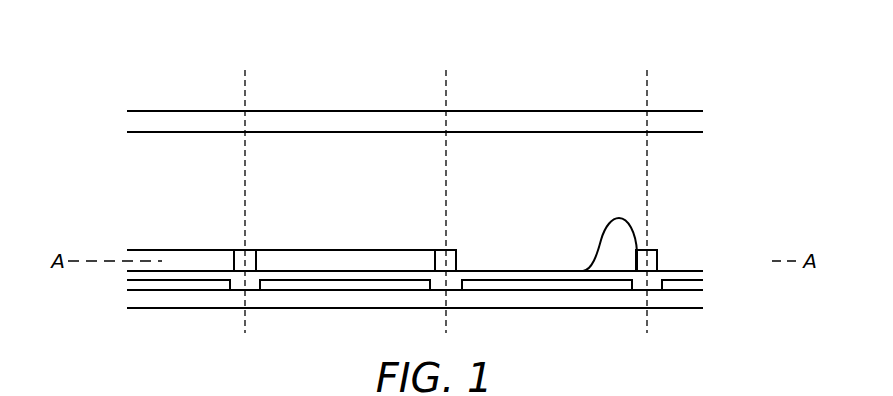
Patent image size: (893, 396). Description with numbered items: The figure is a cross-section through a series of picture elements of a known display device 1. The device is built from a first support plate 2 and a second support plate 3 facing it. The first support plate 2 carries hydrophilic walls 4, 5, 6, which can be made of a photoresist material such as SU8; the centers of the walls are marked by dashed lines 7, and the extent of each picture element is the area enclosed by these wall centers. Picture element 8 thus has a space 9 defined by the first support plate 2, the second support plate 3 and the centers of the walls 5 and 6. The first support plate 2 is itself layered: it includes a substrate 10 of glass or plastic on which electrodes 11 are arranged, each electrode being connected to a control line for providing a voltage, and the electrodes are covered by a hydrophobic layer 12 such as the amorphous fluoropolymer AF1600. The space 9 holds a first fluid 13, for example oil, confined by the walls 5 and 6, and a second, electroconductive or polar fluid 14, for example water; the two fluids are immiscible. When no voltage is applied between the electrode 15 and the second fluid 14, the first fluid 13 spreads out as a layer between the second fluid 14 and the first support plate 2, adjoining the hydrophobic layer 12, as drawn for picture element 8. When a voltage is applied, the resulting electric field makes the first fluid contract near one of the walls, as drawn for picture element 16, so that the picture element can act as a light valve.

The display device 1 is at (682, 60).
The first support plate 2 is at (762, 252).
The second support plate 3 is at (697, 122).
The hydrophilic wall 4 is at (652, 252).
The hydrophilic wall 5 is at (452, 252).
The hydrophilic wall 6 is at (240, 252).
The dashed lines 7 is at (245, 90).
The picture element 8 is at (245, 73).
The space 9 is at (338, 171).
The substrate 10 is at (704, 299).
The electrodes 11 is at (704, 287).
The hydrophobic layer 12 is at (704, 278).
The first fluid 13 is at (400, 256).
The second fluid 14 is at (333, 243).
The electrode 15 is at (400, 289).
The picture element 16 is at (447, 73).